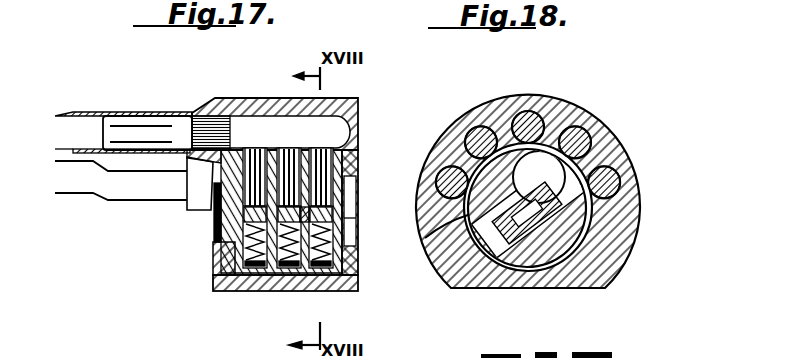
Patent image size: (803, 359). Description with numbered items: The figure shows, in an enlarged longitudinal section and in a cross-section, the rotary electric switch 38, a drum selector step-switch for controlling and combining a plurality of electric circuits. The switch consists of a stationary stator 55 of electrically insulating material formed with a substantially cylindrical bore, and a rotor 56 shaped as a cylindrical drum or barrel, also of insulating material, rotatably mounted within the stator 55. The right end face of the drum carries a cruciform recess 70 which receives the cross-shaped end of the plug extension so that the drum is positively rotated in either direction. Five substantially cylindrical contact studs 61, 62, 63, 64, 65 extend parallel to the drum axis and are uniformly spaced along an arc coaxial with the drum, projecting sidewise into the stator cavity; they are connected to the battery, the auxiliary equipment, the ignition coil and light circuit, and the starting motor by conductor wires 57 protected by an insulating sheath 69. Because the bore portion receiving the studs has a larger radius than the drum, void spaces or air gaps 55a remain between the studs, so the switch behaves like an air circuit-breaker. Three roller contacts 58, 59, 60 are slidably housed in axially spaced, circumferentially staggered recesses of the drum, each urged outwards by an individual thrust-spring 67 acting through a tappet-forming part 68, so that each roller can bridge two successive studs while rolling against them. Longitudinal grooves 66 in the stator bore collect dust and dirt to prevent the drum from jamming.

In FIG. 17, the rotary electric switch 38 is at (178, 274).
In FIG. 17, the stator 55 is at (333, 98).
In FIG. 18, the stator 55 is at (458, 258).
In FIG. 18, the void spaces or air gaps 55a is at (532, 103).
In FIG. 17, the rotor 56 is at (216, 225).
In FIG. 18, the rotor 56 is at (425, 239).
In FIG. 17, the conductor wires 57 is at (75, 132).
In FIG. 17, the roller contact 58 is at (352, 158).
In FIG. 18, the roller contact 58 is at (552, 182).
In FIG. 17, the roller contact 59 is at (288, 150).
In FIG. 17, the roller contact 60 is at (255, 157).
In FIG. 18, the contact stud 61 is at (453, 168).
In FIG. 18, the contact stud 62 is at (480, 130).
In FIG. 18, the contact stud 63 is at (573, 110).
In FIG. 18, the contact stud 64 is at (603, 132).
In FIG. 18, the contact stud 65 is at (604, 176).
In FIG. 17, the longitudinal grooves 66 is at (305, 283).
In FIG. 18, the longitudinal grooves 66 is at (563, 265).
In FIG. 17, the thrust-spring 67 is at (262, 275).
In FIG. 18, the thrust-spring 67 is at (498, 270).
In FIG. 17, the tappet-forming part 68 is at (318, 215).
In FIG. 18, the tappet-forming part 68 is at (587, 243).
In FIG. 17, the insulating sheath 69 is at (127, 110).
In FIG. 17, the cruciform recess 70 is at (353, 233).